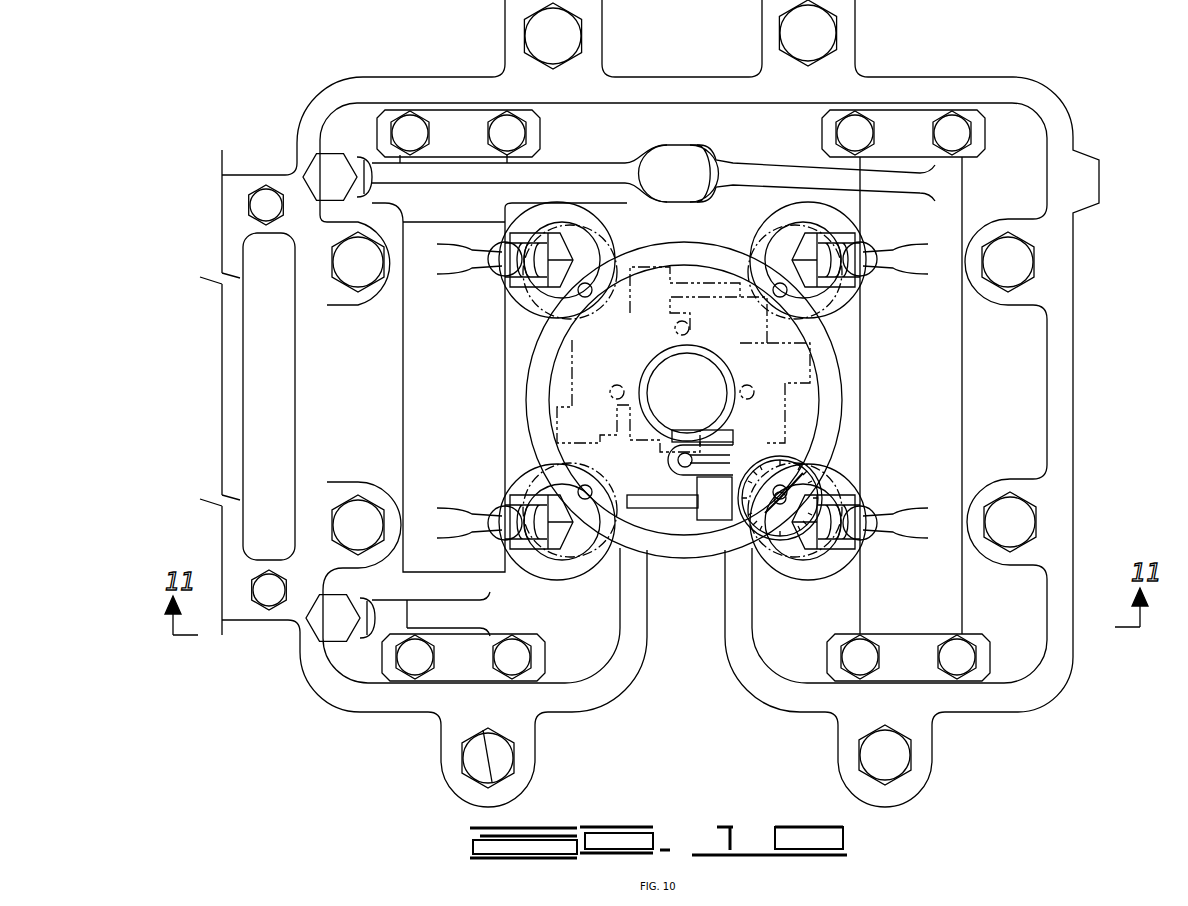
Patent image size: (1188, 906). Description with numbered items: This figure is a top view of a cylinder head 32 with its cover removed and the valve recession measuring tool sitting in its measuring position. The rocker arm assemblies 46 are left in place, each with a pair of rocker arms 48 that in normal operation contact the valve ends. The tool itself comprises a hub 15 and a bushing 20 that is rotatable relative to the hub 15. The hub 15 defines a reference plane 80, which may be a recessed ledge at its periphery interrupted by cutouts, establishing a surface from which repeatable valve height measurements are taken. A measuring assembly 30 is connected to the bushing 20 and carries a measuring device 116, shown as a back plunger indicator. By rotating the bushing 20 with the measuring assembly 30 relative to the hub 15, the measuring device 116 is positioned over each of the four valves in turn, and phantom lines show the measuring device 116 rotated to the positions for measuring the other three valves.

The hub 15 is at (715, 235).
The bushing 20 is at (800, 395).
The measuring assembly 30 is at (707, 510).
The cylinder head 32 is at (1075, 458).
The rocker arm assembly 46 is at (417, 418).
The rocker arm 48 is at (905, 515).
The reference plane 80 is at (835, 345).
The measuring device 116 is at (750, 532).